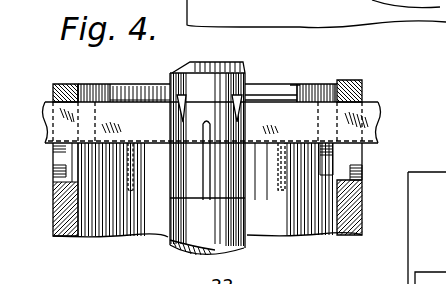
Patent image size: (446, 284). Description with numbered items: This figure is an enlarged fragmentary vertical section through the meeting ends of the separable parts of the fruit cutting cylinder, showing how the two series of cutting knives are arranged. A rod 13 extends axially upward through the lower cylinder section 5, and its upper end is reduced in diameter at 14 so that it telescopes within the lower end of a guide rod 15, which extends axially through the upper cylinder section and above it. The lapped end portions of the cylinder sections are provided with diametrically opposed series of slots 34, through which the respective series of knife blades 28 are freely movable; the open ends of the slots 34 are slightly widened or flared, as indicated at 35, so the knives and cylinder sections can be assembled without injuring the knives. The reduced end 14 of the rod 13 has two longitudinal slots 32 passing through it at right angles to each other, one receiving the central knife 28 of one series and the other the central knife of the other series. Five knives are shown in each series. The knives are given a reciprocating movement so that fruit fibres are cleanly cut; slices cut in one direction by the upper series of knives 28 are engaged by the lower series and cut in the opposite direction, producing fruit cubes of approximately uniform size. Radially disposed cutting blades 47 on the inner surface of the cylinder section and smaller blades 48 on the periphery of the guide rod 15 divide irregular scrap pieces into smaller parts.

The cylinder section 5 is at (44, 100).
The rod 13 is at (183, 240).
The reduced upper end 14 is at (229, 72).
The guide rod 15 is at (198, 73).
The knife blades 28 is at (128, 110).
The longitudinal slots 32 is at (205, 127).
The slots 34 is at (65, 84).
The flared open ends 35 is at (355, 177).
The radially disposed cutting blades 47 is at (97, 84).
The smaller blades 48 is at (123, 96).